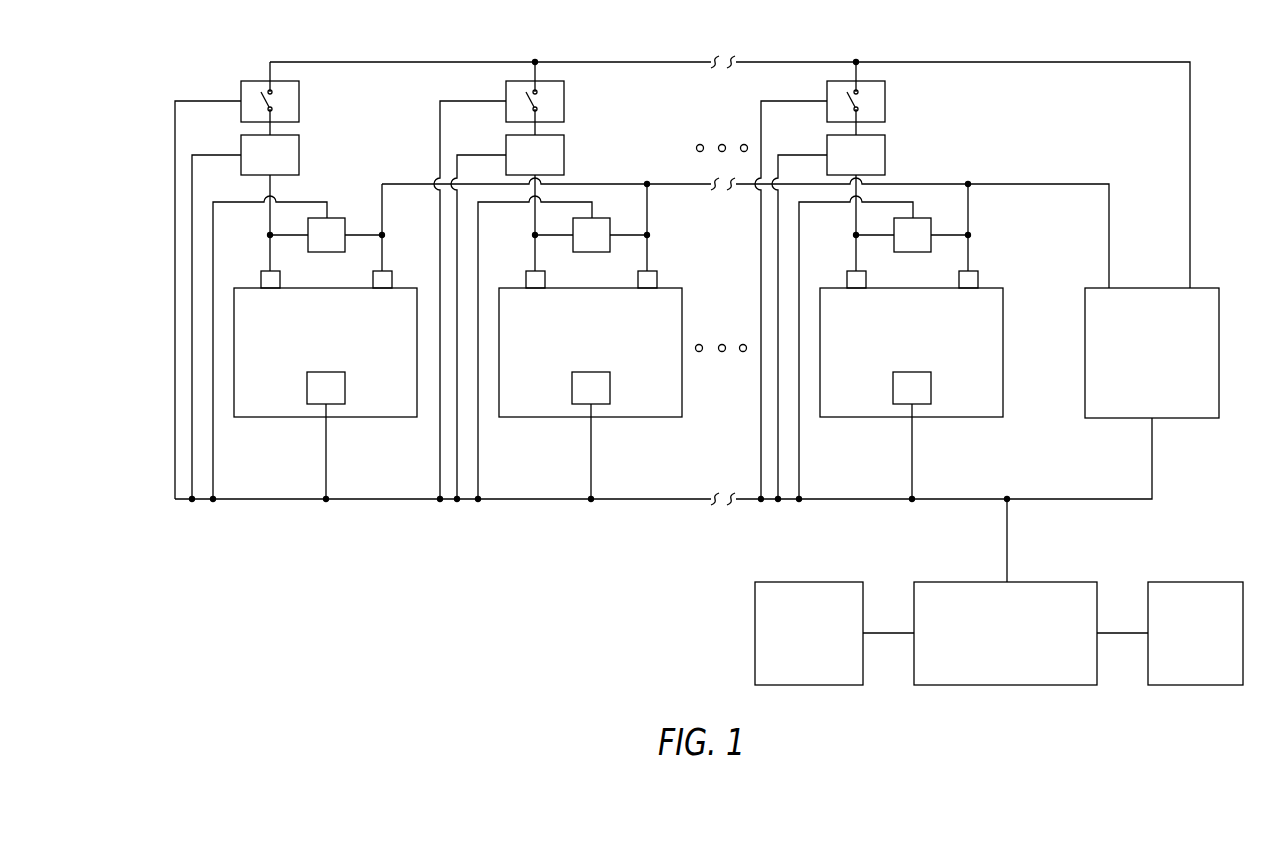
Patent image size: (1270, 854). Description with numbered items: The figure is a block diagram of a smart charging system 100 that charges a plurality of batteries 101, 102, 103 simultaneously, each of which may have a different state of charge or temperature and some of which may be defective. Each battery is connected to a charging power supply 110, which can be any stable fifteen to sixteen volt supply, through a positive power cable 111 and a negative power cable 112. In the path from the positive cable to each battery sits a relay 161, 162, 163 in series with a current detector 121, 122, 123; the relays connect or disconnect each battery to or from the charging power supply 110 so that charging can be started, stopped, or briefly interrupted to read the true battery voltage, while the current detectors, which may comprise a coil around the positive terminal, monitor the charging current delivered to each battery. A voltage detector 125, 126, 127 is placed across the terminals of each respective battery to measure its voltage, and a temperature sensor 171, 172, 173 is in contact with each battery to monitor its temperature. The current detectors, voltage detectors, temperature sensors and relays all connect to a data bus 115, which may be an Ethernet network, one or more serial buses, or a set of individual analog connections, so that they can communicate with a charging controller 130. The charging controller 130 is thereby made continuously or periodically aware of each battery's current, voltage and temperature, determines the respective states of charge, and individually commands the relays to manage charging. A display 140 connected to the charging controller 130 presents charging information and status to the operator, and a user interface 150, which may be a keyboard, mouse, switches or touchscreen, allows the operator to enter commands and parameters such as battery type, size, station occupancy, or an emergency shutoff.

The smart charging system 100 is at (234, 70).
The battery 101 is at (325, 352).
The battery 102 is at (590, 352).
The battery 103 is at (911, 352).
The charging power supply 110 is at (1152, 353).
The positive power cable 111 is at (1000, 62).
The negative power cable 112 is at (1000, 184).
The data bus 115 is at (1067, 499).
The current detector 121 is at (299, 157).
The current detector 122 is at (564, 157).
The current detector 123 is at (885, 157).
The voltage detector 125 is at (331, 218).
The voltage detector 126 is at (596, 218).
The voltage detector 127 is at (917, 218).
The charging controller 130 is at (1058, 582).
The display 140 is at (823, 582).
The user interface 150 is at (1205, 582).
The relay 161 is at (299, 104).
The relay 162 is at (564, 104).
The relay 163 is at (885, 104).
The temperature sensor 171 is at (345, 388).
The temperature sensor 172 is at (610, 388).
The temperature sensor 173 is at (931, 388).